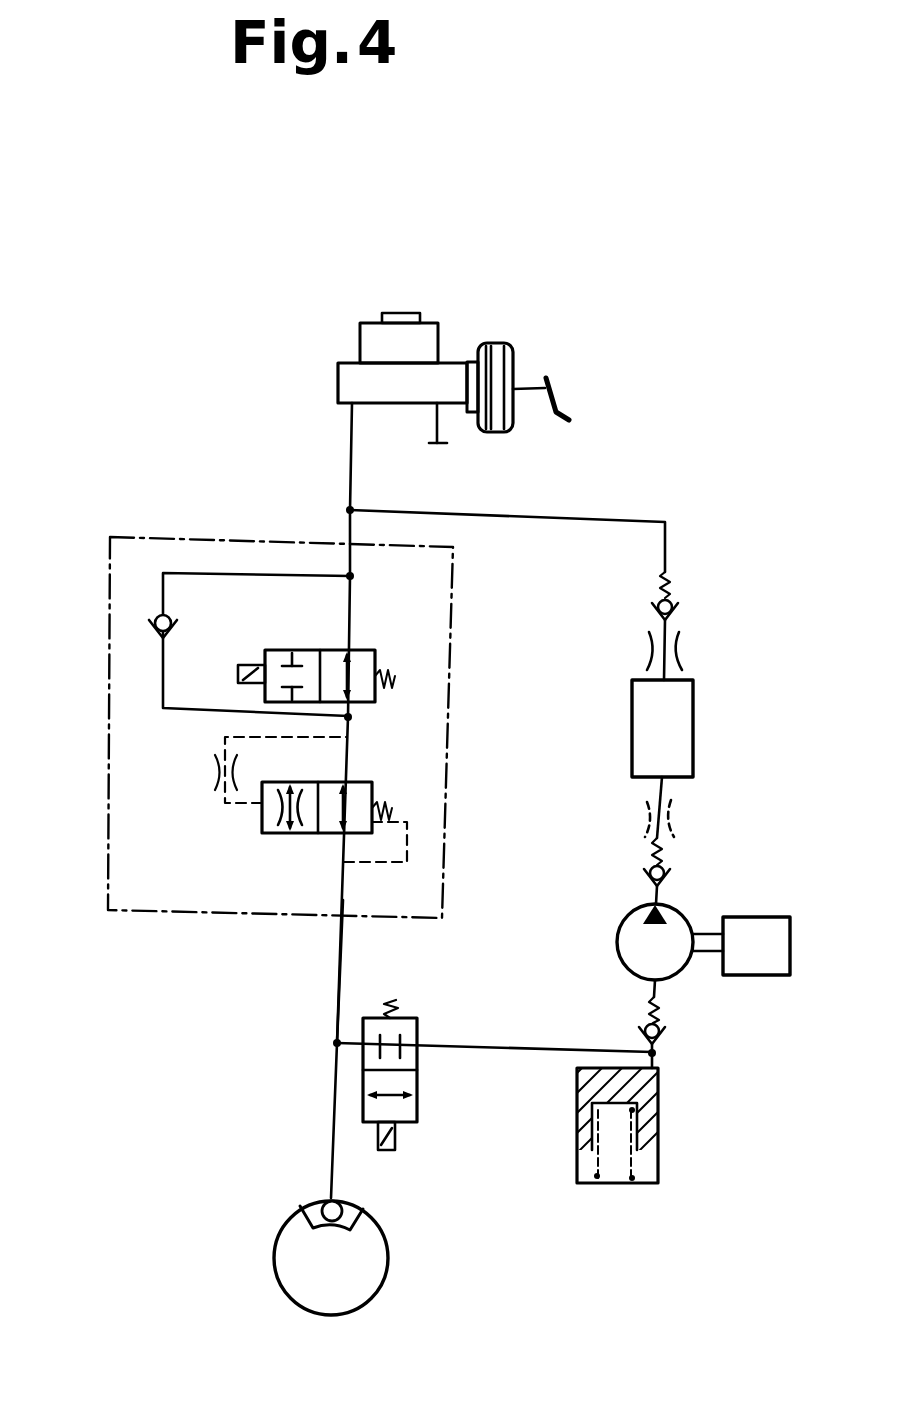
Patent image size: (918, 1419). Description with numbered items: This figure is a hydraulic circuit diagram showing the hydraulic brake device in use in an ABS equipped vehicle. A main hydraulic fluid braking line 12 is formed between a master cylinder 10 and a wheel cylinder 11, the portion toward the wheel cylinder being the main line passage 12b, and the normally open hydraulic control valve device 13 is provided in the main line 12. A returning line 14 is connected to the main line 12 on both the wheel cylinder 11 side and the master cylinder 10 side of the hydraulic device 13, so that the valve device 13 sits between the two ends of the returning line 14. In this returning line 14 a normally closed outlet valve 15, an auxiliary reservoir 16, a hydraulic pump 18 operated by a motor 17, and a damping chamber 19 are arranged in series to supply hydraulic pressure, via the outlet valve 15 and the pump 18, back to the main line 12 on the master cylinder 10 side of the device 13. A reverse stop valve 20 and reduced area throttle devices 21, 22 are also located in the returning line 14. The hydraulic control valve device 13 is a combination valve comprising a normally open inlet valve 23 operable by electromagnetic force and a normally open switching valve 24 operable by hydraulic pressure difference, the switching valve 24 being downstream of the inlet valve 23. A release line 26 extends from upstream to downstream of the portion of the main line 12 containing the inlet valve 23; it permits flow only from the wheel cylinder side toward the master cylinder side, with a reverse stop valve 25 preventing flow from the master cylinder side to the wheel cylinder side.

The master cylinder 10 is at (455, 363).
The wheel cylinder 11 is at (330, 1198).
The main hydraulic fluid braking line 12 is at (350, 466).
The main line passage 12b is at (337, 992).
The hydraulic control valve device 13 is at (134, 534).
The returning line 14 is at (503, 1048).
The outlet valve 15 is at (410, 1125).
The auxiliary reservoir 16 is at (660, 1130).
The motor 17 is at (762, 917).
The hydraulic pump 18 is at (672, 903).
The damping chamber 19 is at (695, 730).
The reverse stop valve 20 is at (678, 605).
The reduced area throttle device 21 is at (648, 810).
The reduced area throttle device 22 is at (650, 648).
The inlet valve 23 is at (275, 650).
The switching valve 24 is at (272, 835).
The reverse stop valve 25 is at (153, 618).
The release line 26 is at (162, 678).